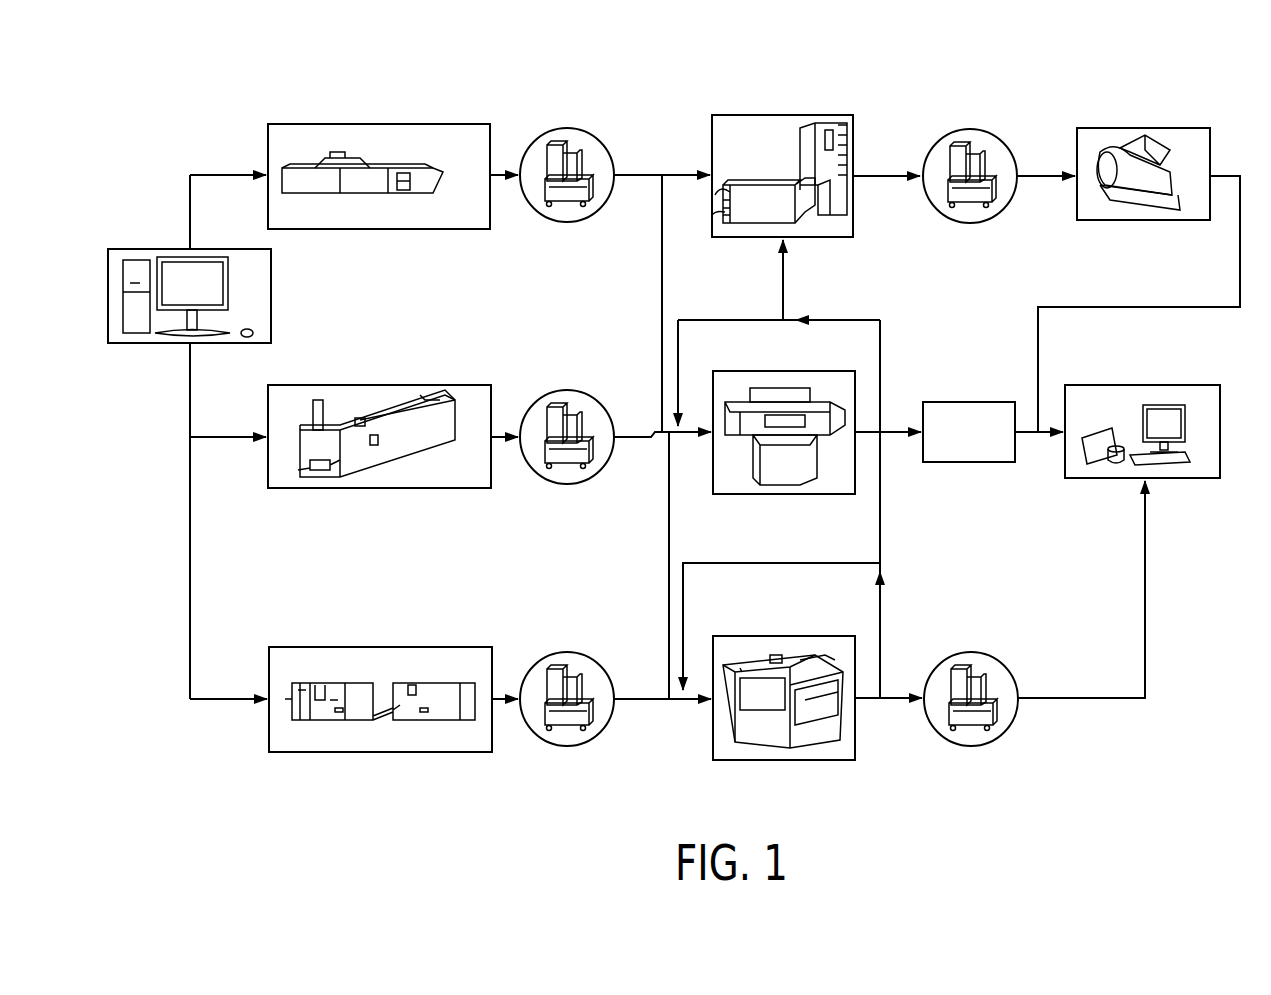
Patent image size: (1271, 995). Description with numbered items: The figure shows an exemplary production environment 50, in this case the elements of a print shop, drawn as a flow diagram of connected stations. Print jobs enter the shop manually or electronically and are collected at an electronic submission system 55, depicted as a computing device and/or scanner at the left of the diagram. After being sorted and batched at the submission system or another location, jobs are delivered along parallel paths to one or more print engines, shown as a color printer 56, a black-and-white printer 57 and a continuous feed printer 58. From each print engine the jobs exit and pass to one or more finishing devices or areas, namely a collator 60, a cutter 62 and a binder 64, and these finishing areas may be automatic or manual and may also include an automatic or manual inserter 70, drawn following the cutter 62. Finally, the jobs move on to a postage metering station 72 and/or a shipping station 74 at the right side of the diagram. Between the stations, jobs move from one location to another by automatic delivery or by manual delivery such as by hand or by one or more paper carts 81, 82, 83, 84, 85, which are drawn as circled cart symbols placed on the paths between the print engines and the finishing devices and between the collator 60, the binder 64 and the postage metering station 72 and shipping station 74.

The production environment 50 is at (216, 109).
The electronic submission system 55 is at (140, 345).
The color printer 56 is at (398, 230).
The black-and-white printer 57 is at (400, 489).
The continuous feed printer 58 is at (400, 753).
The collator 60 is at (795, 238).
The cutter 62 is at (795, 495).
The binder 64 is at (795, 761).
The inserter 70 is at (966, 463).
The postage metering station 72 is at (1138, 221).
The shipping station 74 is at (1173, 479).
The paper cart 81 is at (567, 223).
The paper cart 82 is at (567, 485).
The paper cart 83 is at (567, 747).
The paper cart 84 is at (966, 224).
The paper cart 85 is at (969, 748).